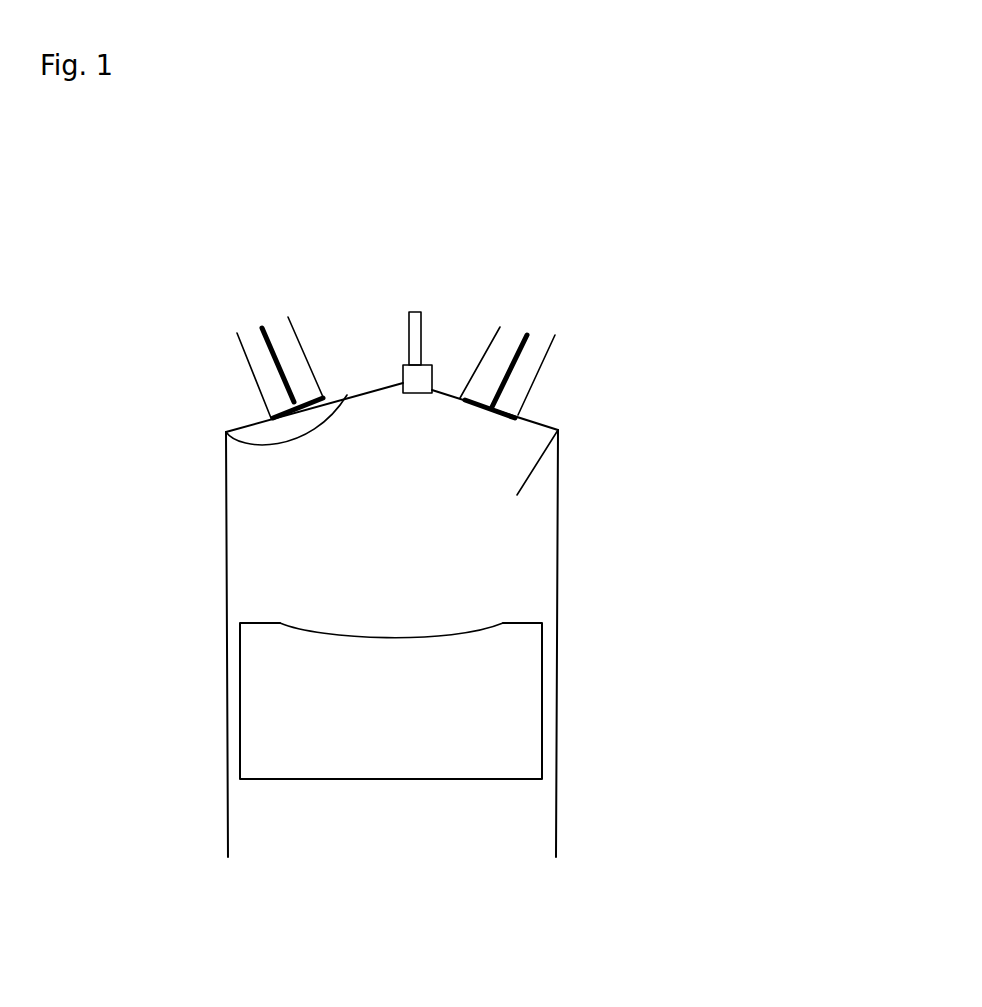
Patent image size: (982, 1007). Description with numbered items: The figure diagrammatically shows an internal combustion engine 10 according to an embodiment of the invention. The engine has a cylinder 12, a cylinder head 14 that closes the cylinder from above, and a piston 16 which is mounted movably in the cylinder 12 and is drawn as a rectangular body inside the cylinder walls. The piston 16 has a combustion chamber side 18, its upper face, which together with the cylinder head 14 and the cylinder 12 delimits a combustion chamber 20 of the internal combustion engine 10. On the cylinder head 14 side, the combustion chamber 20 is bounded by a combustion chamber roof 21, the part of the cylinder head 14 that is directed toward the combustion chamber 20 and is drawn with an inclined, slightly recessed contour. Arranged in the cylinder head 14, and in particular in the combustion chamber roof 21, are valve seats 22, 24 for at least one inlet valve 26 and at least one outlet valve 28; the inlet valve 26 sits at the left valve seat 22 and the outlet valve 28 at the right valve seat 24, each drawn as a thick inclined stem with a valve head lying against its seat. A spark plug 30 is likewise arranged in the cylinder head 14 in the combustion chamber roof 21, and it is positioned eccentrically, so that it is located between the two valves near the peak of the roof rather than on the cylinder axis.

The internal combustion engine 10 is at (560, 234).
The cylinder 12 is at (227, 540).
The cylinder head 14 is at (246, 424).
The piston 16 is at (497, 692).
The combustion chamber side 18 is at (520, 622).
The combustion chamber 20 is at (558, 429).
The combustion chamber roof 21 is at (232, 437).
The valve seat 22 is at (322, 397).
The valve seat 24 is at (458, 398).
The inlet valve 26 is at (262, 333).
The outlet valve 28 is at (519, 350).
The spark plug 30 is at (409, 340).